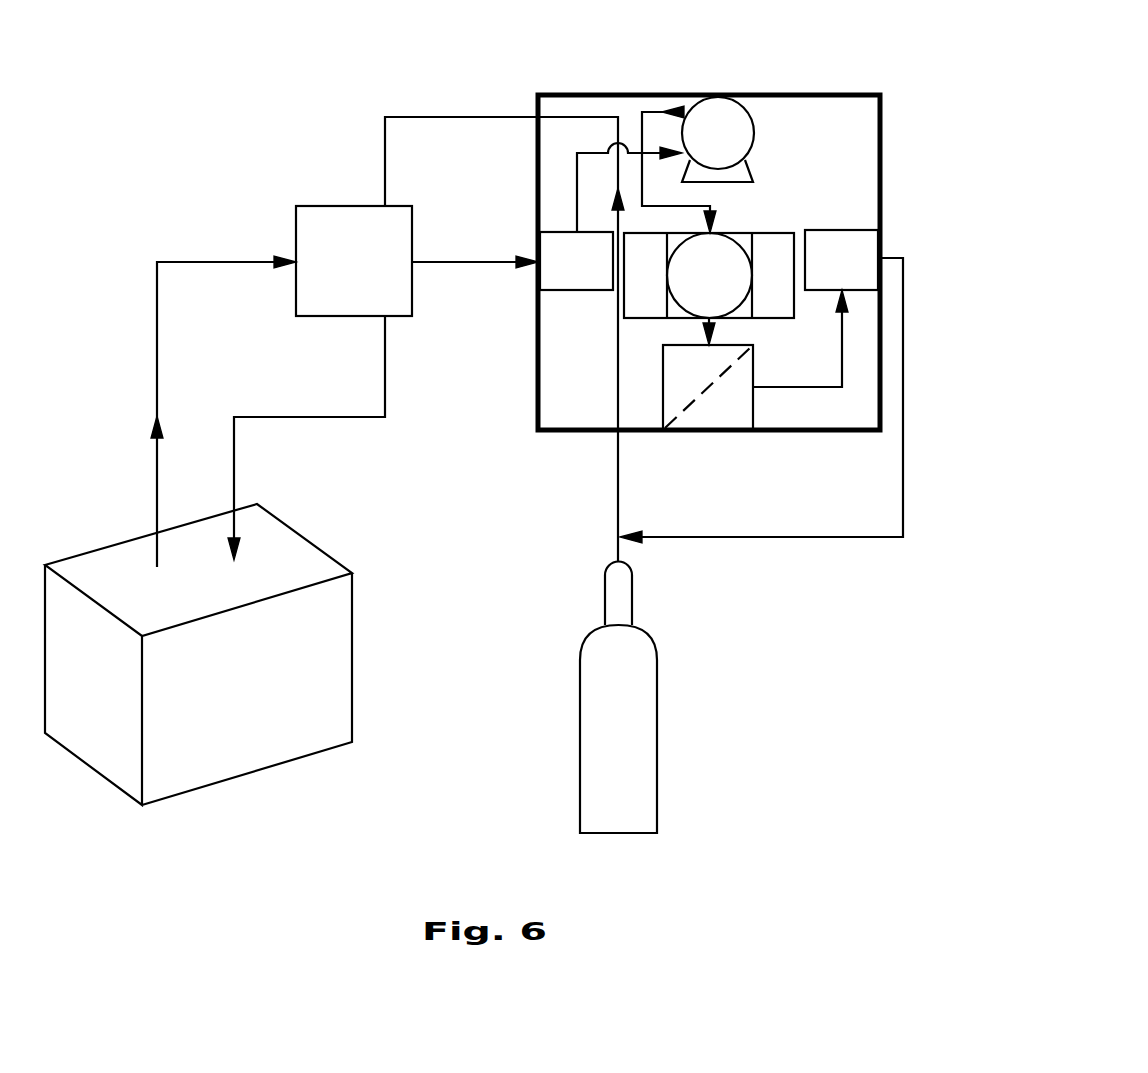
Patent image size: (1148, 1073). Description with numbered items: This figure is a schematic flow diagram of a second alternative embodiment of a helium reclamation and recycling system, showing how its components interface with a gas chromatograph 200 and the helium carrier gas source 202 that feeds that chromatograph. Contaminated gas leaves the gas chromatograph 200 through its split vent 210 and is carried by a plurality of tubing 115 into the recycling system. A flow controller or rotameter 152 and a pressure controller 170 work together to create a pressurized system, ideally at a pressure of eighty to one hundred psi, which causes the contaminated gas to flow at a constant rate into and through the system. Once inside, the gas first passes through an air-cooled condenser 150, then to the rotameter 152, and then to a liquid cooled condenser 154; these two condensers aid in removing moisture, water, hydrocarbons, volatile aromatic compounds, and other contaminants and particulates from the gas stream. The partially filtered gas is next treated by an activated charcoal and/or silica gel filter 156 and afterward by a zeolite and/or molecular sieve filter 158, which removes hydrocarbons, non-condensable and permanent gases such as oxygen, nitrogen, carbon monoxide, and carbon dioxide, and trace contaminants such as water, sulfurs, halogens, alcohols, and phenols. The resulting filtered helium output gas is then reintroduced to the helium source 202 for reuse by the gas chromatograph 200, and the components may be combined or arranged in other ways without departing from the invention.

The tubing 115 is at (460, 262).
The air-cooled condenser 150 is at (344, 206).
The rotameter 152 is at (538, 235).
The liquid cooled condenser 154 is at (723, 110).
The activated charcoal and/or silica gel filter 156 is at (775, 240).
The zeolite and/or molecular sieve filter 158 is at (715, 423).
The pressure controller 170 is at (833, 238).
The gas chromatograph 200 is at (338, 655).
The helium carrier gas source 202 is at (648, 703).
The split vent 210 is at (155, 507).